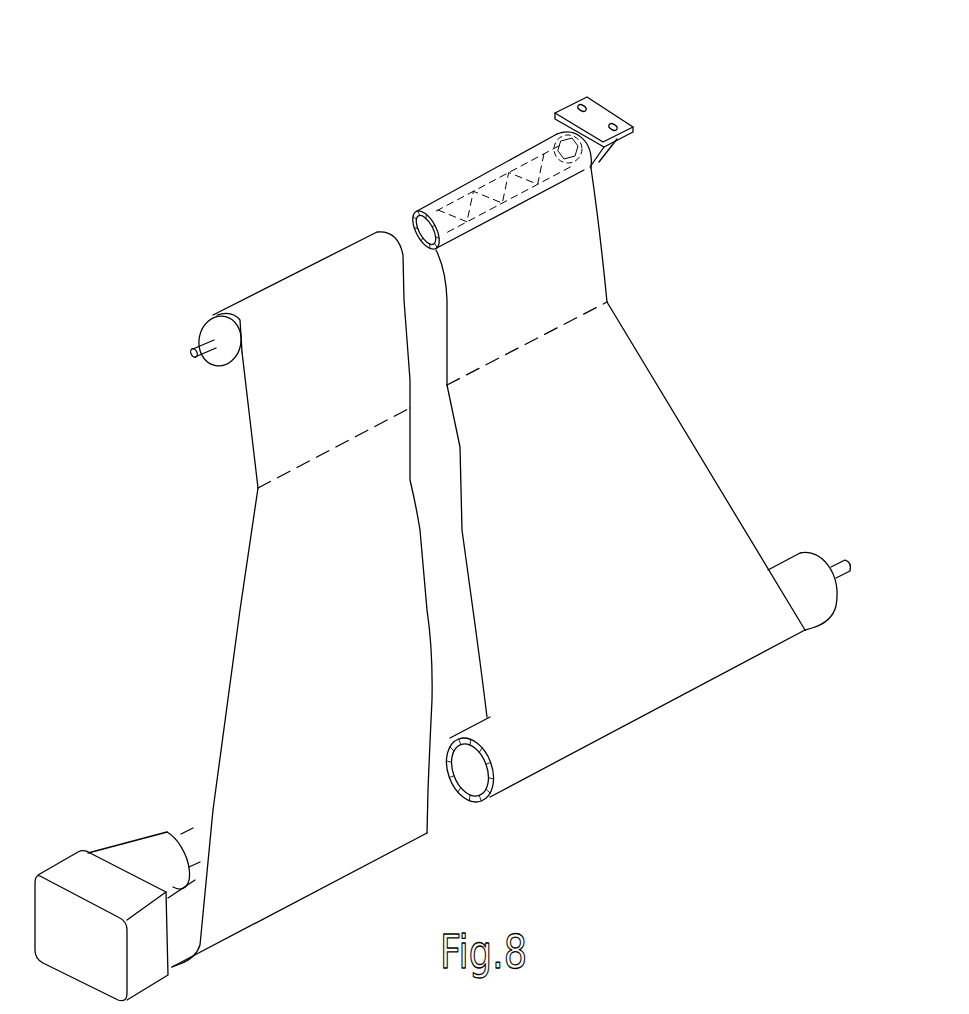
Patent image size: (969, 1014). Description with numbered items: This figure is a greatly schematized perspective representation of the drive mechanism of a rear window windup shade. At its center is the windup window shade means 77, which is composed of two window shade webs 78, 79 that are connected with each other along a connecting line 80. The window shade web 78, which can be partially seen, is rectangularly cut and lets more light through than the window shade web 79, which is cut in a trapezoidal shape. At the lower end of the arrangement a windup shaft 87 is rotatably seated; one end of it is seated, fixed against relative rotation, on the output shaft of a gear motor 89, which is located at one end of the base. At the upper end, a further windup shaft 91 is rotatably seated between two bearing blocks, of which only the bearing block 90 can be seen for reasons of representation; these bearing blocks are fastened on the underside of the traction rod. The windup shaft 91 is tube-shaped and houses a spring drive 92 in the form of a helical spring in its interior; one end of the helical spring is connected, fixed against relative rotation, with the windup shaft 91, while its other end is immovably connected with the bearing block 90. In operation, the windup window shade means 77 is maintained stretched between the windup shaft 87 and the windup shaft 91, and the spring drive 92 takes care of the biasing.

The windup window shade means 77 is at (488, 567).
The window shade web 78 is at (543, 287).
The window shade web 79 is at (588, 534).
The connecting line 80 is at (512, 352).
The windup shaft 87 is at (792, 580).
The gear motor 89 is at (107, 833).
The bearing block 90 is at (626, 98).
The windup shaft 91 is at (222, 325).
The spring drive 92 is at (495, 190).